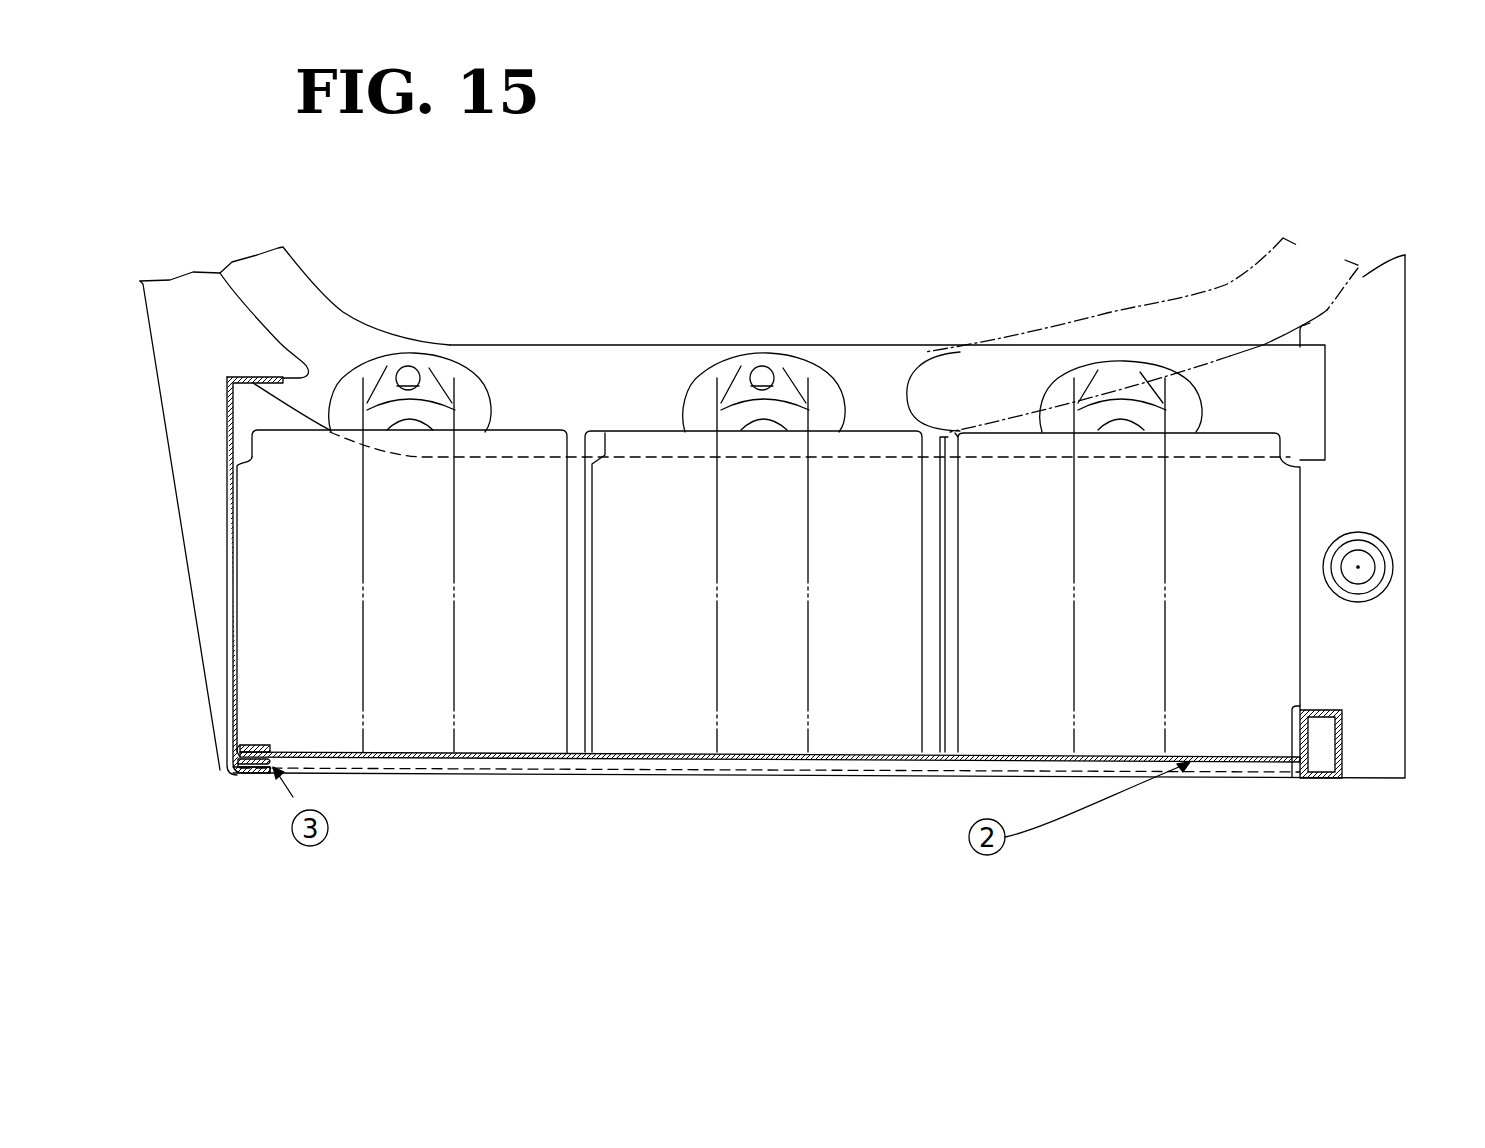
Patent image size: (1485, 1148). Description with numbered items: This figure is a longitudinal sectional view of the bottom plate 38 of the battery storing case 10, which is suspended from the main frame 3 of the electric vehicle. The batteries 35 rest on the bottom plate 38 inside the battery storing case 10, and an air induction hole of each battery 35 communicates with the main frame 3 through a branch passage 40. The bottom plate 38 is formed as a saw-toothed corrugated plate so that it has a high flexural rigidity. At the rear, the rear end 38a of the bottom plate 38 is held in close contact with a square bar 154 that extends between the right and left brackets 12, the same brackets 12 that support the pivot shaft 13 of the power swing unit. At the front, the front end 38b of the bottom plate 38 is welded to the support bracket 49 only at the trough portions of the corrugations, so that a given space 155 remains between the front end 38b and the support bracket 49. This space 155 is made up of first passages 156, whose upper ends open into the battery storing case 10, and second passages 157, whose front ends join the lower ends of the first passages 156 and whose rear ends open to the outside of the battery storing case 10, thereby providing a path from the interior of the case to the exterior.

The main frame 3 is at (653, 345).
The battery storing case 10 is at (615, 790).
The brackets 12 is at (1405, 740).
The pivot shaft 13 is at (1358, 567).
The batteries 35 is at (537, 430).
The bottom plate 38 is at (805, 776).
The rear end 38a is at (1290, 778).
The front end 38b is at (273, 750).
The branch passage 40 is at (432, 390).
The support bracket 49 is at (223, 640).
The square bar 154 is at (1327, 778).
The space 155 is at (238, 727).
The first passages 156 is at (240, 775).
The second passages 157 is at (250, 775).